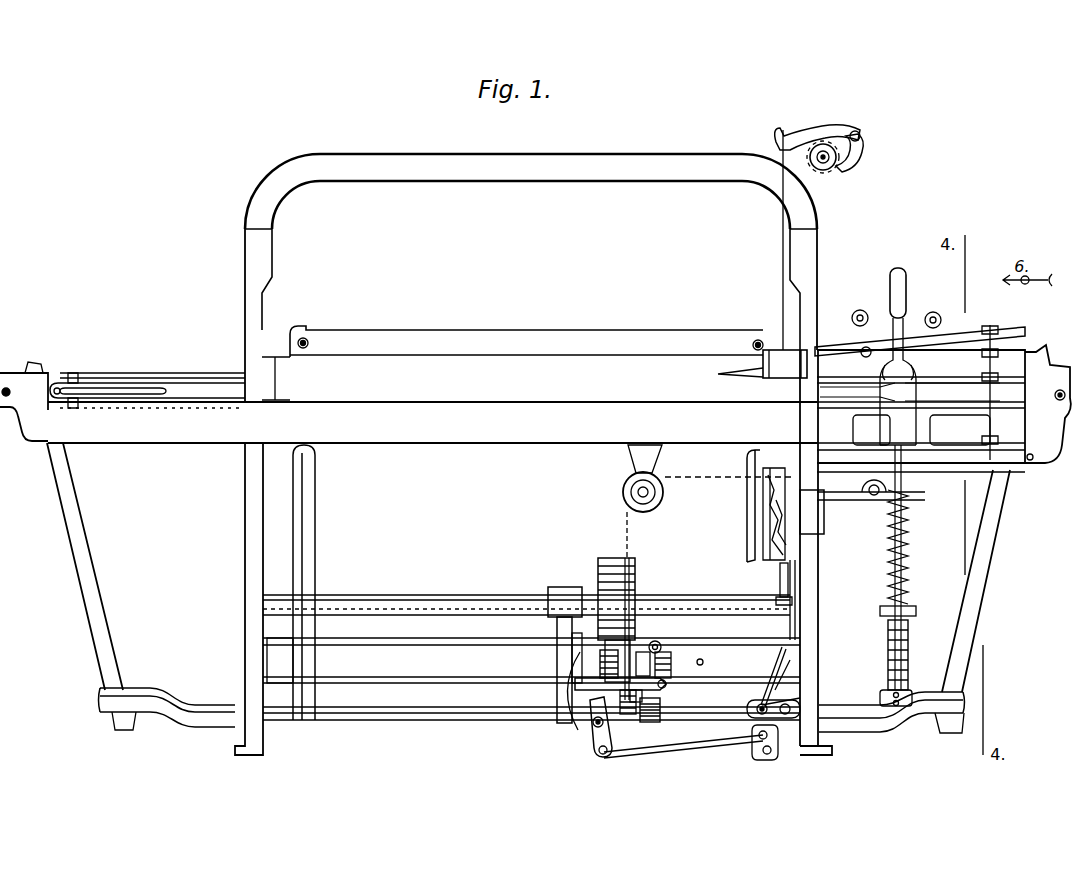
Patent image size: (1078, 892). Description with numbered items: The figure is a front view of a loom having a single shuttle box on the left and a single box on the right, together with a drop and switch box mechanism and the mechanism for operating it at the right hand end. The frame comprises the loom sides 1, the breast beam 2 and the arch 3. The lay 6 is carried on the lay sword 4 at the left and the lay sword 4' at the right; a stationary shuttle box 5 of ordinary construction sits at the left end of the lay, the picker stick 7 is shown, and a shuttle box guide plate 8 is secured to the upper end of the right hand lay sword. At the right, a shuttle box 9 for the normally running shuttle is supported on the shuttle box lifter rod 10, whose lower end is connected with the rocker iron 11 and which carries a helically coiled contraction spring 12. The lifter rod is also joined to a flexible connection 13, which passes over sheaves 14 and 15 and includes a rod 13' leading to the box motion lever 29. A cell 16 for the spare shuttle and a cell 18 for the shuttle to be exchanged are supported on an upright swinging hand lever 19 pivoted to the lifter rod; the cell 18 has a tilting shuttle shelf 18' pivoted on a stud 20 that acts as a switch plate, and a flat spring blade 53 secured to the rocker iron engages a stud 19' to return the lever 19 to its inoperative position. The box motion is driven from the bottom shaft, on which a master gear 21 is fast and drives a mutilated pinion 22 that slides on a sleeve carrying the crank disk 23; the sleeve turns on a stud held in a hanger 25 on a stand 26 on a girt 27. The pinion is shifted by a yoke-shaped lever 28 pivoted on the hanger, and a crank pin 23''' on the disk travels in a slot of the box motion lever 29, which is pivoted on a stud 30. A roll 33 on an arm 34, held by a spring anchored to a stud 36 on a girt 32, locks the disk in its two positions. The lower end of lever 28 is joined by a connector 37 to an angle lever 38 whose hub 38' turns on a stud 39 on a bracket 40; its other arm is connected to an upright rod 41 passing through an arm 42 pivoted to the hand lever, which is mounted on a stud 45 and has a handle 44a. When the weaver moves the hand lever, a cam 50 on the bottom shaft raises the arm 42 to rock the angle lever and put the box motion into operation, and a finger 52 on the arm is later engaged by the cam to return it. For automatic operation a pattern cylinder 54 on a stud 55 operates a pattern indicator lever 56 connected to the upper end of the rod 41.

The loom sides 1 is at (250, 548).
The breast beam 2 is at (386, 408).
The arch 3 is at (363, 180).
The lay sword 4 is at (319, 582).
The lay sword 4' is at (738, 506).
The stationary shuttle box 5 is at (190, 382).
The lay 6 is at (174, 432).
The picker stick 7 is at (88, 549).
The shuttle box guide plate 8 is at (1025, 392).
The shuttle box 9 is at (848, 402).
The shuttle box lifter rod 10 is at (893, 580).
The rocker iron 11 is at (880, 702).
The helically coiled contraction spring 12 is at (908, 572).
The flexible connection 13 is at (809, 510).
The rod 13' is at (642, 615).
The sheave 14 is at (868, 495).
The sheave 15 is at (624, 492).
The cell 16 is at (975, 368).
The cell 18 is at (920, 380).
The shuttle shelf 18' is at (826, 331).
The upright swinging hand lever 19 is at (902, 417).
The stud or bolt 19' is at (883, 625).
The stud 20 is at (392, 605).
The master gear 21 is at (605, 572).
The mutilated pinion 22 is at (582, 682).
The crank disk 23 is at (654, 673).
The crank pin 23''' is at (665, 664).
The hanger or bracket 25 is at (589, 704).
The stand 26 is at (575, 666).
The girt 27 is at (558, 642).
The yoke-shaped lever 28 is at (592, 718).
The box motion lever 29 is at (671, 660).
The stud 30 is at (665, 686).
The girt 32 is at (460, 652).
The roll 33 is at (622, 716).
The arm 34 is at (650, 722).
The stud 36 is at (656, 641).
The rod or connector 37 is at (685, 748).
The angle lever 38 is at (769, 741).
The hub 38' is at (765, 700).
The stud 39 is at (758, 735).
The bracket or support 40 is at (766, 675).
The rod or connector 41 is at (783, 238).
The arm 42 is at (778, 568).
The handle 44a is at (765, 514).
The stud 45 is at (775, 532).
The cam 50 is at (762, 612).
The finger 52 is at (701, 658).
The flat spring blade 53 is at (908, 642).
The pattern cylinder 54 is at (852, 153).
The stud 55 is at (828, 168).
The pattern indicator lever 56 is at (812, 130).